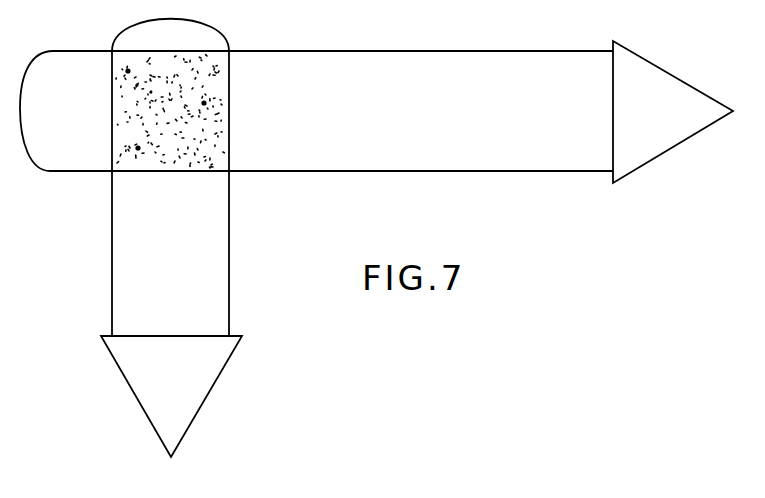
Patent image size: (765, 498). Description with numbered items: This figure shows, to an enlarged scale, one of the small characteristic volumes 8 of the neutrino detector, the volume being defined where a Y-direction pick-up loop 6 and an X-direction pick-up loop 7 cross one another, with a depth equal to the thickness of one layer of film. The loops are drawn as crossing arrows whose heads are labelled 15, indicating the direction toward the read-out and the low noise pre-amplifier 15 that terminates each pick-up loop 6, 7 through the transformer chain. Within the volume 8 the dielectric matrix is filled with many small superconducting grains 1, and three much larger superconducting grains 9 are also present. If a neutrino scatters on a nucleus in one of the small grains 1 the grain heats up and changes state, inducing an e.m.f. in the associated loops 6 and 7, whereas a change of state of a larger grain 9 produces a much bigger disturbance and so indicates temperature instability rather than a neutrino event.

The superconducting grains 1 is at (158, 102).
The wire pick-up loops 6 is at (229, 293).
The wire pick-up loops 7 is at (418, 172).
The volume 8 is at (220, 155).
The larger superconducting grains 9 is at (128, 71).
The low noise pre-amplifier 15 is at (657, 158).